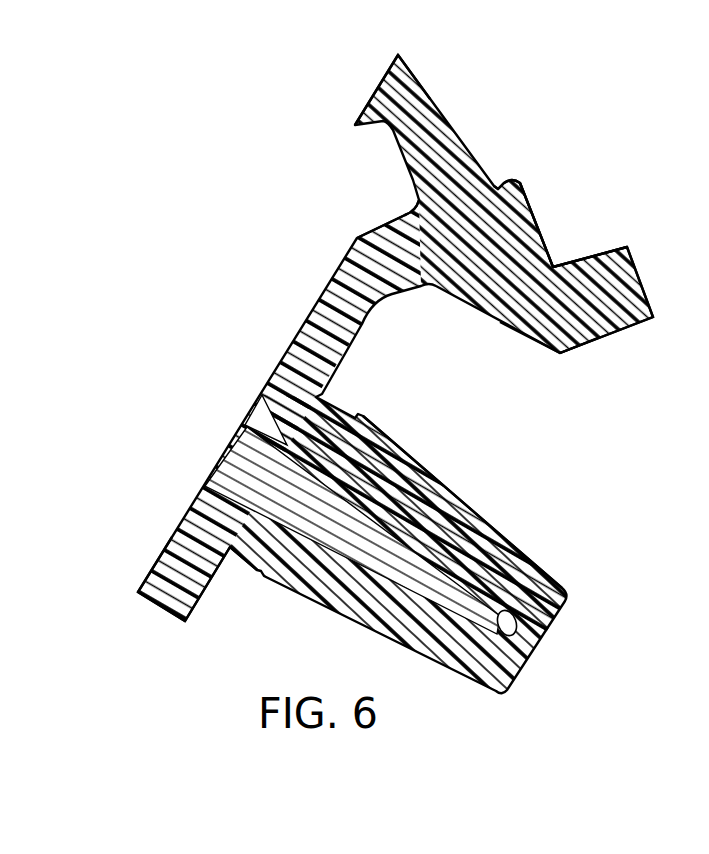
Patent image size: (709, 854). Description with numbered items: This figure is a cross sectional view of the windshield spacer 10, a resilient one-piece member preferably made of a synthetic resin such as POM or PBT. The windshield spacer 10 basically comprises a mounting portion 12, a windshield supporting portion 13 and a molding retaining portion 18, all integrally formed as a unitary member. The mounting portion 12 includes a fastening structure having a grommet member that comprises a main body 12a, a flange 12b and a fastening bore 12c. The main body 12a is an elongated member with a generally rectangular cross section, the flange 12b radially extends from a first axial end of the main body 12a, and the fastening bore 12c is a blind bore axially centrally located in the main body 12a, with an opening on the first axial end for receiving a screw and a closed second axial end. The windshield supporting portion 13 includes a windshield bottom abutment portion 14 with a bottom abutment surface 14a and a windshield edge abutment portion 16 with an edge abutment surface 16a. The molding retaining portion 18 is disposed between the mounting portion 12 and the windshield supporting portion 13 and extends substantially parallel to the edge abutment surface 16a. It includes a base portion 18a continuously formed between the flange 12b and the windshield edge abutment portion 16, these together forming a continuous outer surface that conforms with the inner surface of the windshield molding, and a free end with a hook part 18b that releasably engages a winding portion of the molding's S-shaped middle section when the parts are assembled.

The windshield spacer 10 is at (242, 253).
The mounting portion 12 is at (366, 446).
The main body 12a is at (440, 505).
The flange 12b is at (173, 534).
The fastening bore 12c is at (227, 480).
The windshield supporting portion 13 is at (539, 368).
The windshield bottom abutment portion 14 is at (613, 292).
The bottom abutment surface 14a is at (597, 243).
The windshield edge abutment portion 16 is at (498, 232).
The edge abutment surface 16a is at (540, 227).
The molding retaining portion 18 is at (478, 104).
The base portion 18a is at (387, 223).
The hook part 18b is at (375, 90).